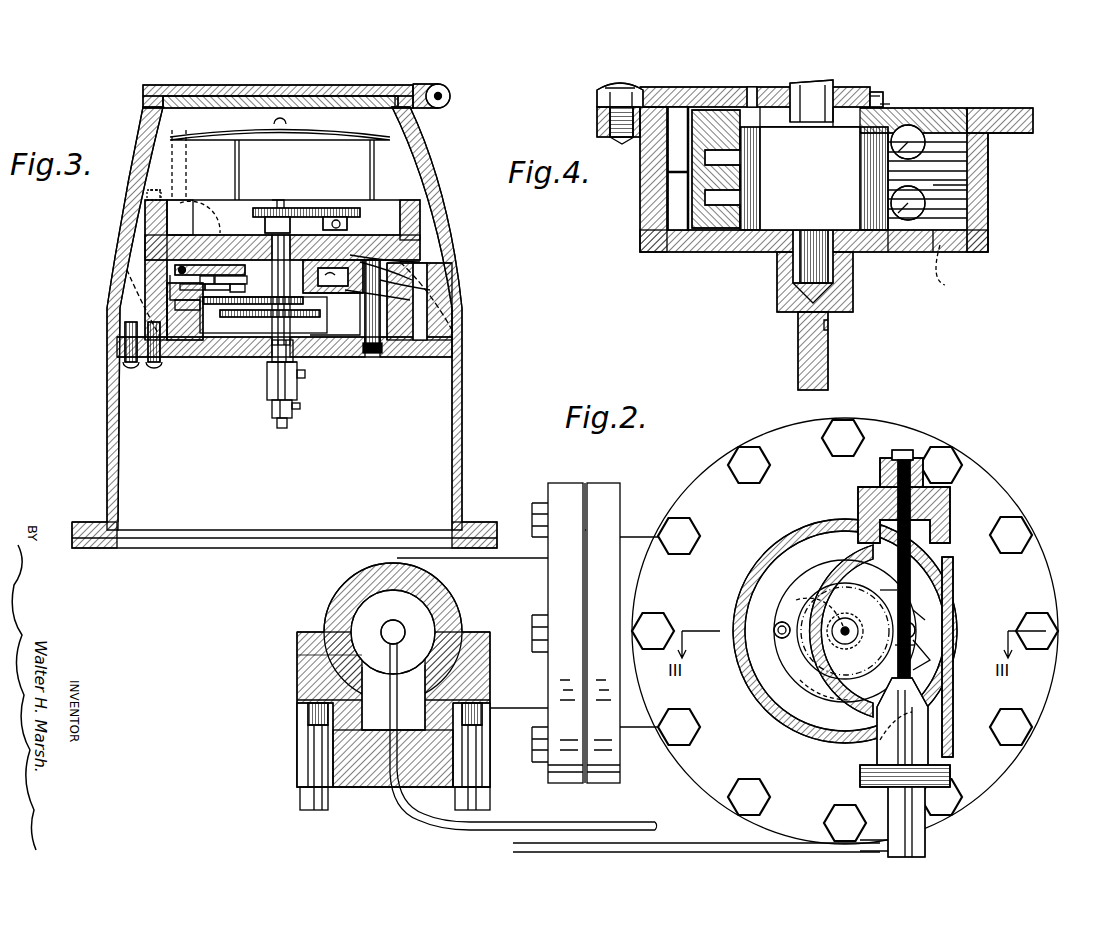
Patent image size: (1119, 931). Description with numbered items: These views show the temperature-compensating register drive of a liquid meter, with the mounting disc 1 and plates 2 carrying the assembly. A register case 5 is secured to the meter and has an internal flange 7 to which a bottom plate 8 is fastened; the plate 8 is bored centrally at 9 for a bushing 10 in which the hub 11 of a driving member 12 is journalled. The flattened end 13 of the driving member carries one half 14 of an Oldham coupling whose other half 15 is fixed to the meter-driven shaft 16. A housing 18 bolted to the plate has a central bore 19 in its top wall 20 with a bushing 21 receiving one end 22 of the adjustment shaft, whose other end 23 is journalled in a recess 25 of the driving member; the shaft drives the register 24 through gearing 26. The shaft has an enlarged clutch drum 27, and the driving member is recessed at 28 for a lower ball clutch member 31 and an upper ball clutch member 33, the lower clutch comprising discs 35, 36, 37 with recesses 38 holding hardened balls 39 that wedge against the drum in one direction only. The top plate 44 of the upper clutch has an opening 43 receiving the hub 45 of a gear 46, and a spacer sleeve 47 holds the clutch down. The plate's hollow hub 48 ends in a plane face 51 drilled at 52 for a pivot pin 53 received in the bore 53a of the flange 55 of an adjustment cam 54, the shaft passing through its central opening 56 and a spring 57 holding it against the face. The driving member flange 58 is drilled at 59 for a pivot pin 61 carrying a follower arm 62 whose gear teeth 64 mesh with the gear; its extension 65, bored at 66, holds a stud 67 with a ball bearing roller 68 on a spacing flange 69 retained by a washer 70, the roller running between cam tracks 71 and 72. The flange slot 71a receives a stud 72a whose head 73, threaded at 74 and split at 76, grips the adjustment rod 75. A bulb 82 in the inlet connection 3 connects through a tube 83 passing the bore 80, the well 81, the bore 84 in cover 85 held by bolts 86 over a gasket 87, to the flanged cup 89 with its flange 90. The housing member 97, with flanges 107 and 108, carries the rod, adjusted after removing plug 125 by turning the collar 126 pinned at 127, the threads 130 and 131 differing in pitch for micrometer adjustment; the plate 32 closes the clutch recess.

In FIG. 2, the mounting flange disc 1 is at (1046, 565).
In FIG. 2, the support plates 2 is at (510, 715).
In FIG. 2, the inlet connection 3 is at (297, 656).
In FIG. 3, the register case 5 is at (462, 352).
In FIG. 2, the register case 5 is at (828, 531).
In FIG. 3, the internal flange 7 is at (452, 305).
In FIG. 3, the bottom plate 8 is at (425, 357).
In FIG. 3, the central bore 9 is at (262, 352).
In FIG. 3, the bushing 10 is at (272, 350).
In FIG. 3, the hub 11 is at (270, 362).
In FIG. 4, the hub 11 is at (853, 288).
In FIG. 3, the driving member 12 is at (300, 406).
In FIG. 4, the driving member 12 is at (988, 150).
In FIG. 4, the flattened end 13 is at (828, 352).
In FIG. 3, the coupling member half 14 is at (268, 380).
In FIG. 3, the coupling member half 15 is at (272, 410).
In FIG. 3, the shaft 16 is at (278, 423).
In FIG. 3, the housing 18 is at (420, 285).
In FIG. 2, the housing 18 is at (802, 542).
In FIG. 3, the central bore 19 is at (333, 217).
In FIG. 3, the top wall 20 is at (210, 225).
In FIG. 3, the bushing 21 is at (258, 230).
In FIG. 3, the adjustment shaft end 22 is at (280, 290).
In FIG. 4, the adjustment shaft end 22 is at (835, 122).
In FIG. 4, the adjustment shaft end 23 is at (805, 258).
In FIG. 3, the register 24 is at (318, 130).
In FIG. 4, the recess 25 is at (828, 270).
In FIG. 3, the gearing 26 is at (279, 206).
In FIG. 4, the clutch drum 27 is at (722, 252).
In FIG. 4, the recess 28 is at (988, 190).
In FIG. 4, the lower ball clutch driving member 31 is at (660, 236).
In FIG. 4, the plate 32 is at (953, 273).
In FIG. 4, the upper ball clutch driving member 33 is at (975, 110).
In FIG. 4, the clutch disc 35 is at (988, 215).
In FIG. 4, the clutch disc 36 is at (988, 200).
In FIG. 4, the clutch disc 37 is at (988, 177).
In FIG. 4, the recess 38 is at (680, 252).
In FIG. 4, the ball 39 is at (891, 148).
In FIG. 4, the opening 43 is at (905, 112).
In FIG. 4, the top plate 44 is at (942, 112).
In FIG. 4, the hub 45 is at (780, 122).
In FIG. 3, the gear 46 is at (263, 318).
In FIG. 4, the gear 46 is at (883, 104).
In FIG. 3, the spacer sleeve 47 is at (282, 304).
In FIG. 3, the hollow hub portion 48 is at (333, 340).
In FIG. 3, the plane surface 51 is at (271, 310).
In FIG. 3, the drilled hole 52 is at (376, 355).
In FIG. 3, the pivot pin 53 is at (340, 300).
In FIG. 2, the pivot pin 53 is at (773, 628).
In FIG. 3, the bore 53a is at (410, 292).
In FIG. 3, the adjustment cam 54 is at (340, 233).
In FIG. 2, the adjustment cam 54 is at (800, 610).
In FIG. 3, the flange 55 is at (400, 270).
In FIG. 2, the flange 55 is at (913, 592).
In FIG. 3, the central opening 56 is at (325, 208).
In FIG. 2, the central opening 56 is at (843, 622).
In FIG. 3, the spring 57 is at (400, 256).
In FIG. 2, the spring 57 is at (832, 640).
In FIG. 3, the flange 58 is at (339, 285).
In FIG. 4, the flange 58 is at (1033, 122).
In FIG. 4, the drilled hole 59 is at (605, 118).
In FIG. 4, the pivot pin 61 is at (612, 139).
In FIG. 4, the follower arm 62 is at (597, 97).
In FIG. 4, the gear teeth 64 is at (814, 178).
In FIG. 3, the extension 65 is at (215, 315).
In FIG. 3, the bore 66 is at (165, 310).
In FIG. 3, the stud 67 is at (190, 296).
In FIG. 3, the ball bearing roller 68 is at (205, 283).
In FIG. 3, the spacing flange 69 is at (178, 302).
In FIG. 3, the retaining washer 70 is at (240, 270).
In FIG. 3, the track 71 is at (232, 292).
In FIG. 2, the track 71 is at (900, 624).
In FIG. 3, the slot 71a is at (210, 290).
In FIG. 2, the slot 71a is at (915, 640).
In FIG. 3, the track 72 is at (197, 217).
In FIG. 2, the track 72 is at (755, 672).
In FIG. 3, the stud 72a is at (185, 287).
In FIG. 3, the head 73 is at (220, 268).
In FIG. 2, the head 73 is at (913, 615).
In FIG. 2, the threaded bore 74 is at (845, 631).
In FIG. 3, the adjustment rod 75 is at (215, 278).
In FIG. 2, the adjustment rod 75 is at (913, 578).
In FIG. 2, the split 76 is at (930, 660).
In FIG. 2, the bore 80 is at (370, 686).
In FIG. 2, the well 81 is at (297, 698).
In FIG. 2, the bulb 82 is at (383, 632).
In FIG. 2, the tube 83 is at (400, 810).
In FIG. 2, the bore 84 is at (385, 787).
In FIG. 2, the cover 85 is at (308, 760).
In FIG. 2, the bolts 86 is at (300, 798).
In FIG. 2, the gasket 87 is at (308, 738).
In FIG. 2, the flanged cup 89 is at (925, 818).
In FIG. 2, the flange 90 is at (950, 790).
In FIG. 3, the flanged housing member 97 is at (185, 200).
In FIG. 2, the flanged housing member 97 is at (920, 700).
In FIG. 3, the flange 107 is at (158, 190).
In FIG. 2, the flange 107 is at (950, 768).
In FIG. 2, the flange 108 is at (950, 778).
In FIG. 2, the threaded plug 125 is at (905, 452).
In FIG. 2, the collar 126 is at (925, 490).
In FIG. 2, the pin 127 is at (880, 470).
In FIG. 2, the threads 130 is at (930, 548).
In FIG. 2, the threads 131 is at (880, 675).